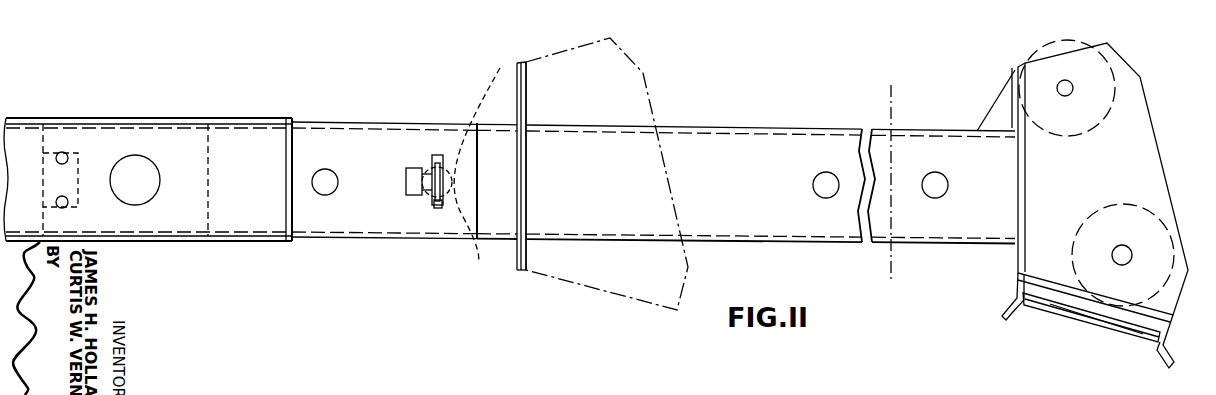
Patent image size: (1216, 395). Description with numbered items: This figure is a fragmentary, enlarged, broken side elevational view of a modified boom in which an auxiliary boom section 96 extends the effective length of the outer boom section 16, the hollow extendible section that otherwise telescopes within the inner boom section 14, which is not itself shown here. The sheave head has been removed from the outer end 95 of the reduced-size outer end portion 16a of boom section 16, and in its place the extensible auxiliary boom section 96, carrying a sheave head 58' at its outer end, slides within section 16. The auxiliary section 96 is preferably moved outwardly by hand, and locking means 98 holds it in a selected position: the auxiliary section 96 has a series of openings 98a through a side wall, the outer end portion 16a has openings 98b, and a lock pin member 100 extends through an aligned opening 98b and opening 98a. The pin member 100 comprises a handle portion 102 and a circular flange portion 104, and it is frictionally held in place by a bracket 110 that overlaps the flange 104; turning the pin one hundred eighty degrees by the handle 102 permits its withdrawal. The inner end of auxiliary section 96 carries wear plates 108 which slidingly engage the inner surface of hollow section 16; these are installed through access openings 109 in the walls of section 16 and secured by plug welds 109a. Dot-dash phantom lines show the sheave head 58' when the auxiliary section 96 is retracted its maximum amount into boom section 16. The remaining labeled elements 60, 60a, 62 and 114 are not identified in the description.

The outer boom section 16 is at (233, 118).
The outer end portion 16a is at (362, 140).
The inner boom section 14 is at (891, 85).
The sheave head 58' is at (859, 203).
The bracket with sheaves 60 is at (1096, 161).
The bracket ledge 60a is at (1068, 312).
The bar 62 is at (1143, 340).
The outer end 95 is at (480, 239).
The auxiliary boom section 96 is at (727, 124).
The locking means 98 is at (445, 148).
The openings 98a is at (936, 174).
The openings 98b is at (328, 170).
The locking pin member 100 is at (437, 152).
The handle portion 102 is at (443, 212).
The flange portion 104 is at (434, 207).
The wear plates 108 is at (70, 122).
The access opening 109 is at (136, 158).
The plug welds 109a is at (69, 196).
The bracket 110 is at (419, 196).
The hole 114 is at (826, 174).